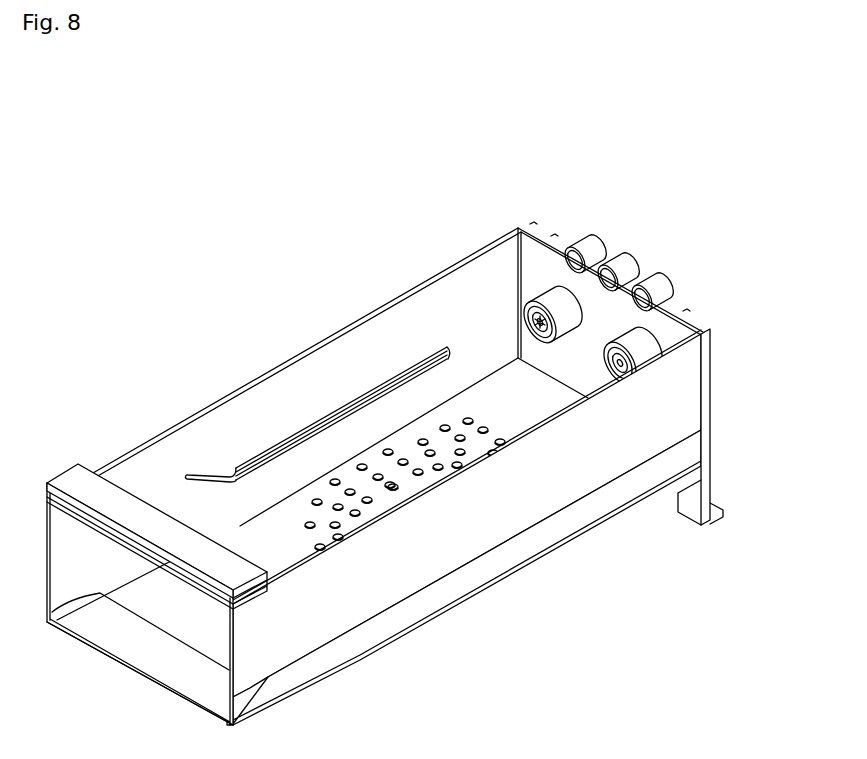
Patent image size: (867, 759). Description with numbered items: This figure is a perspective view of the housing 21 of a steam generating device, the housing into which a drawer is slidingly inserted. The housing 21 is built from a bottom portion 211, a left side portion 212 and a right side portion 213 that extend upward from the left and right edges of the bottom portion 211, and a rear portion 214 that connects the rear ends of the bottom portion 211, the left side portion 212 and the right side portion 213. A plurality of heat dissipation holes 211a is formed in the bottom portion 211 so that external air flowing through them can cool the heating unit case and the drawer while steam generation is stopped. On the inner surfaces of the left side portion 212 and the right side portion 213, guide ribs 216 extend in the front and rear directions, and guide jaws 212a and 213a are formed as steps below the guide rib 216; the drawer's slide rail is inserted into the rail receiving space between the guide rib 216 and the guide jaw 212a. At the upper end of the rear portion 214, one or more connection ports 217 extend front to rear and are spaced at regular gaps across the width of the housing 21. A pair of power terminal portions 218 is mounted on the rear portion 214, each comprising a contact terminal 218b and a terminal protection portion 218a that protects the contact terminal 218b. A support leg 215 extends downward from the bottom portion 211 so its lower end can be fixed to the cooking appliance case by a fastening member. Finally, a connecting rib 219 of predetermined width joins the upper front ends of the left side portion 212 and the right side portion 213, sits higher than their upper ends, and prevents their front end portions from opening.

The housing 21 is at (207, 214).
The bottom portion 211 is at (190, 628).
The heat dissipation holes 211a is at (336, 478).
The left side portion 212 is at (215, 430).
The guide jaw 212a is at (181, 508).
The right side portion 213 is at (513, 515).
The guide jaw 213a is at (457, 567).
The rear portion 214 is at (537, 256).
The support leg 215 is at (712, 478).
The guide ribs 216 is at (275, 440).
The connection ports 217 is at (653, 290).
The power terminal portions 218 is at (477, 300).
The terminal protection portion 218a is at (557, 285).
The contact terminal 218b is at (538, 322).
The connecting rib 219 is at (77, 478).